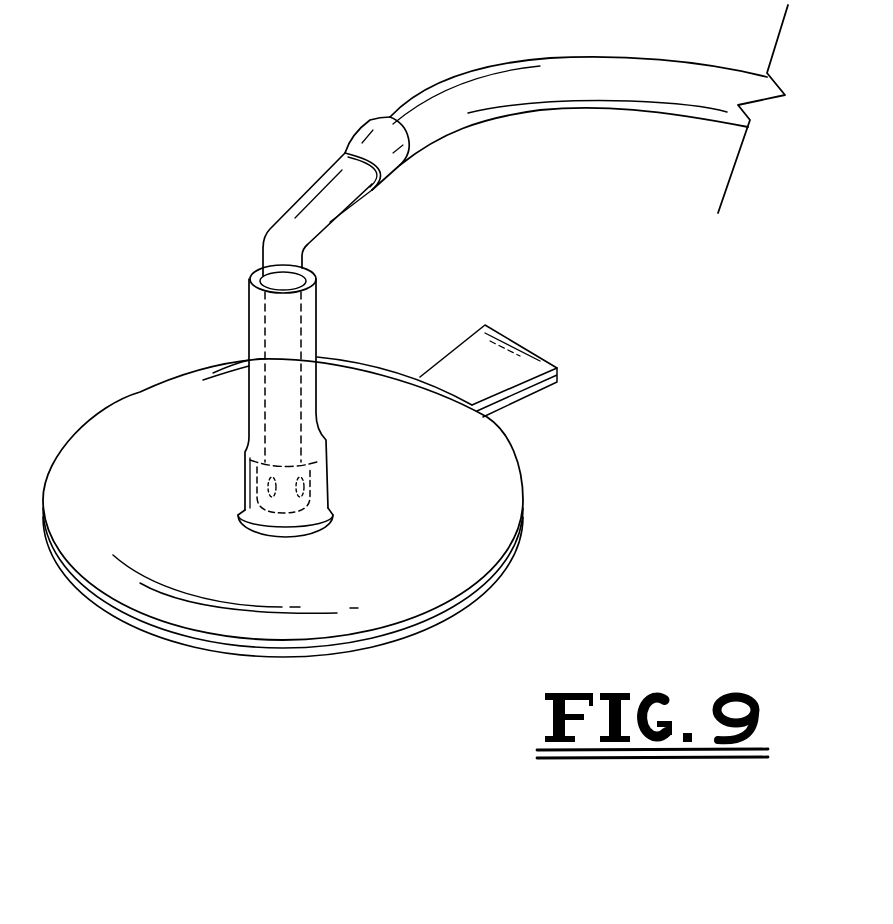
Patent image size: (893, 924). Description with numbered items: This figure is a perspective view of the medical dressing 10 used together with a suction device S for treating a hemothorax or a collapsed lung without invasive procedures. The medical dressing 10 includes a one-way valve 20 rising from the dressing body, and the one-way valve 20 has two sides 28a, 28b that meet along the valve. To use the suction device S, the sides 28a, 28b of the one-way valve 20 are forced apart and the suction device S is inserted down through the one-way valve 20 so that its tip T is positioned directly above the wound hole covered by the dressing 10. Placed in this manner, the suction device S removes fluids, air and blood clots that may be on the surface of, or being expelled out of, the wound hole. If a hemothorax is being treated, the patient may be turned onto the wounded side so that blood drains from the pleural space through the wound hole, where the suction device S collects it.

The medical dressing 10 is at (109, 627).
The one-way valve 20 is at (326, 417).
The side of one-way valve 28a is at (297, 390).
The side of one-way valve 28b is at (250, 313).
The suction device S is at (278, 327).
The tip of suction device T is at (300, 490).